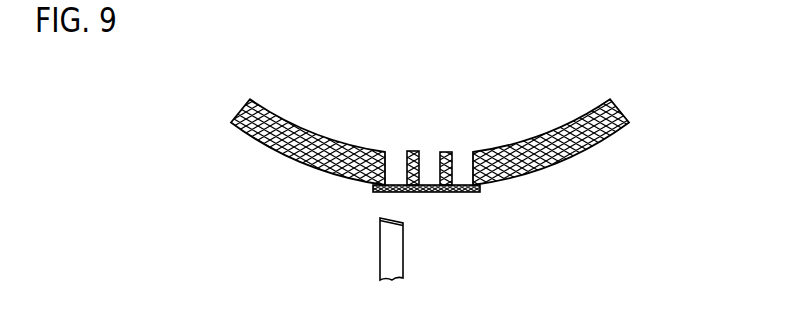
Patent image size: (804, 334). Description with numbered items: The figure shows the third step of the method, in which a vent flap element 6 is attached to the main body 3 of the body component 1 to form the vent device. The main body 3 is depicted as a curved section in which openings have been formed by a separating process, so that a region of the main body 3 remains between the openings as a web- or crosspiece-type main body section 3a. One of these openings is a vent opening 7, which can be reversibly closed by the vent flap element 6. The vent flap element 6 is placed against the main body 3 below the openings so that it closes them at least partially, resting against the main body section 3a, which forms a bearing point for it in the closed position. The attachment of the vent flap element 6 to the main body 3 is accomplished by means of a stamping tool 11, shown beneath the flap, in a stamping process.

The body component 1 is at (242, 155).
The main body 3 is at (545, 138).
The main body section 3a is at (448, 153).
The vent flap element 6 is at (452, 197).
The vent opening 7 is at (394, 148).
The stamping tool 11 is at (381, 248).